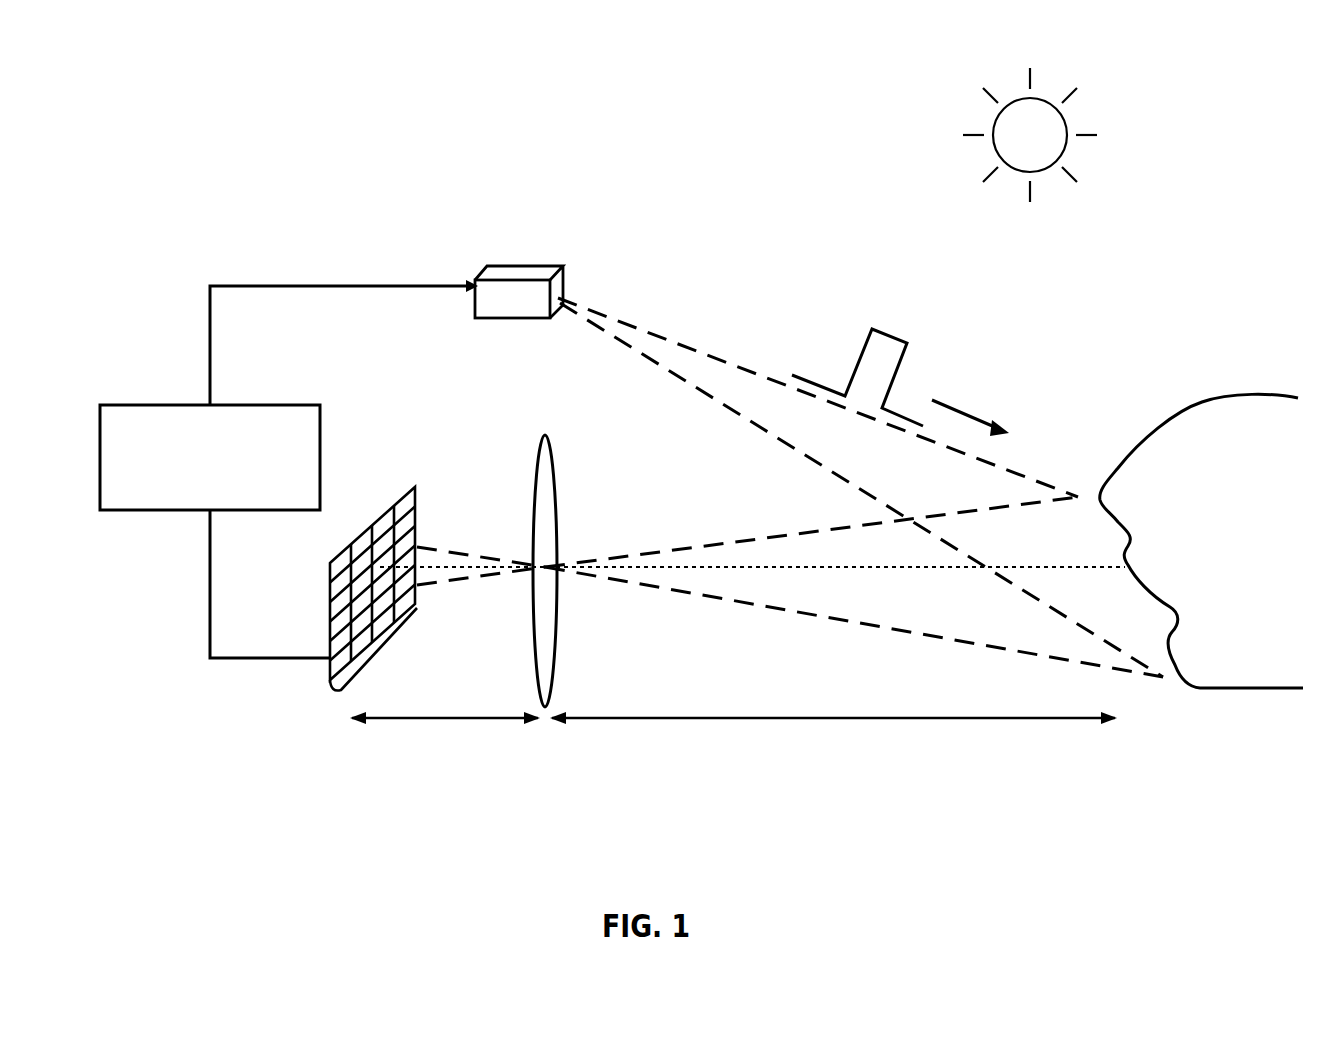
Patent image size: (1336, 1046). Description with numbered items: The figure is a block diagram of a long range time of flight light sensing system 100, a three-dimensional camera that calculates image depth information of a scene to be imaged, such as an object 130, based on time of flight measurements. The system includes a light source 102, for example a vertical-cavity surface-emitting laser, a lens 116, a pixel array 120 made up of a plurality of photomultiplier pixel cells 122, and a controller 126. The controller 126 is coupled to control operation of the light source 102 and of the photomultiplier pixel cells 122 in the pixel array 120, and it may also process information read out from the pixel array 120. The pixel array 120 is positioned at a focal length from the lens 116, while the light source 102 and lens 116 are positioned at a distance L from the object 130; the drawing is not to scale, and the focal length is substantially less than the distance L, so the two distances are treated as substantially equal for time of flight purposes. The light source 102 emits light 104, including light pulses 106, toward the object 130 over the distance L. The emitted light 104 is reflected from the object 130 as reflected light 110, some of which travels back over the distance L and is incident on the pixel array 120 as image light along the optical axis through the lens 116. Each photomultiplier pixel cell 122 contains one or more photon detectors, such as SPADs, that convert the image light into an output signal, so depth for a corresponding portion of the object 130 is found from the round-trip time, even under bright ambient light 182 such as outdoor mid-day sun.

The time of flight light sensing system 100 is at (1234, 165).
The light source 102 is at (574, 270).
The emitted light 104 is at (860, 475).
The light pulses 106 is at (852, 362).
The reflected light 110 is at (790, 587).
The lens 116 is at (538, 456).
The pixel array 120 is at (417, 608).
The photomultiplier pixel cell 122 is at (407, 481).
The controller 126 is at (180, 511).
The object 130 is at (1202, 402).
The ambient light 182 is at (1067, 120).